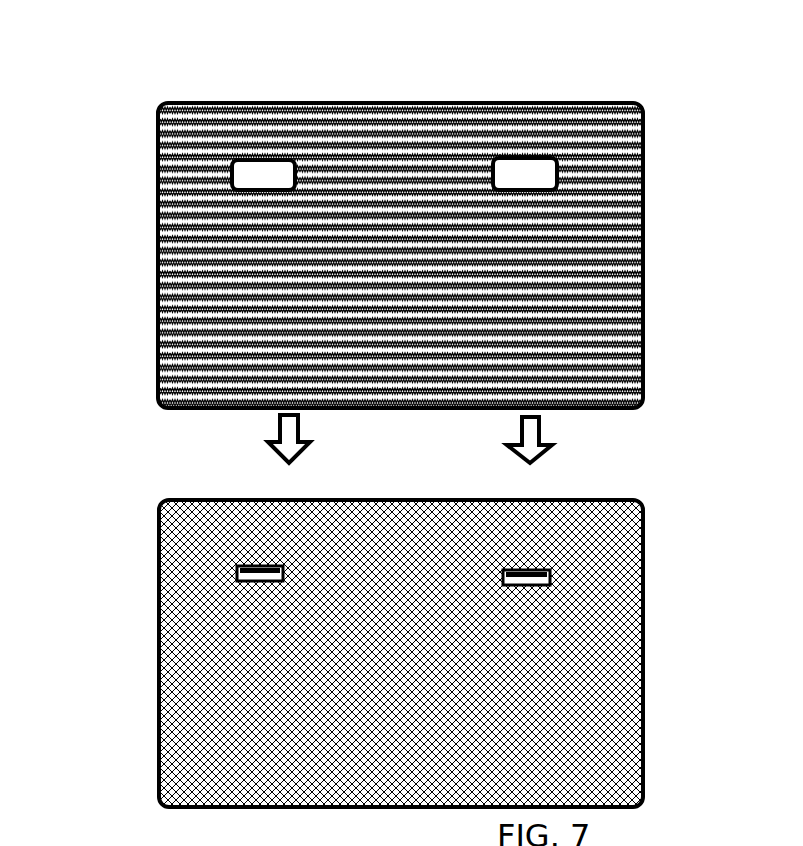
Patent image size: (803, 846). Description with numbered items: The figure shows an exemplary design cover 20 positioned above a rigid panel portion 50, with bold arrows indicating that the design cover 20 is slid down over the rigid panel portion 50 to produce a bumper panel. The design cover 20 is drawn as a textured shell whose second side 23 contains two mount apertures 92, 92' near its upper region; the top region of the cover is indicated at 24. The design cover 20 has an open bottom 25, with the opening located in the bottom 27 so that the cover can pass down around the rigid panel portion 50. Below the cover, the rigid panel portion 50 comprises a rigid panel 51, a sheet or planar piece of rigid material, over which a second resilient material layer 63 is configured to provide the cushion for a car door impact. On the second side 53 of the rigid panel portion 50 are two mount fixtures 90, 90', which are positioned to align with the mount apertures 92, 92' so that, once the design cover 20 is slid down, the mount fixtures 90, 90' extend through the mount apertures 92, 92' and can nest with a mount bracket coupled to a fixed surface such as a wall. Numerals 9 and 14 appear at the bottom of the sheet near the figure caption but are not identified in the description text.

The design cover 20 is at (387, 244).
The second side of the design cover 23 is at (620, 241).
The top edge of first panel 24 is at (547, 103).
The open bottom 25 is at (205, 408).
The bottom 27 is at (630, 421).
The mount apertures 92 is at (257, 124).
The second slot 92' is at (561, 123).
The rigid panel portion 50 is at (403, 630).
The second resilient material layer 63 is at (612, 596).
The rigid panel 51 is at (643, 642).
The second side of the rigid panel portion 53 is at (617, 713).
The mount fixtures 90 is at (244, 517).
The second tab receptacle 90' is at (551, 519).
The sheet numeral 9 is at (308, 835).
The sheet numeral 14 is at (430, 841).